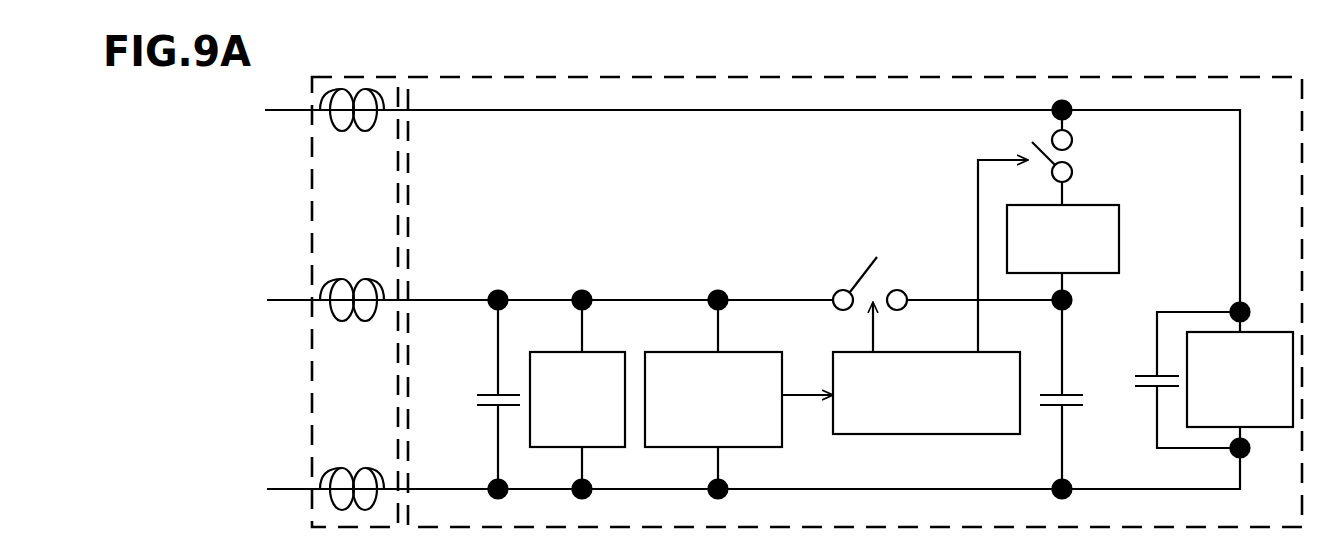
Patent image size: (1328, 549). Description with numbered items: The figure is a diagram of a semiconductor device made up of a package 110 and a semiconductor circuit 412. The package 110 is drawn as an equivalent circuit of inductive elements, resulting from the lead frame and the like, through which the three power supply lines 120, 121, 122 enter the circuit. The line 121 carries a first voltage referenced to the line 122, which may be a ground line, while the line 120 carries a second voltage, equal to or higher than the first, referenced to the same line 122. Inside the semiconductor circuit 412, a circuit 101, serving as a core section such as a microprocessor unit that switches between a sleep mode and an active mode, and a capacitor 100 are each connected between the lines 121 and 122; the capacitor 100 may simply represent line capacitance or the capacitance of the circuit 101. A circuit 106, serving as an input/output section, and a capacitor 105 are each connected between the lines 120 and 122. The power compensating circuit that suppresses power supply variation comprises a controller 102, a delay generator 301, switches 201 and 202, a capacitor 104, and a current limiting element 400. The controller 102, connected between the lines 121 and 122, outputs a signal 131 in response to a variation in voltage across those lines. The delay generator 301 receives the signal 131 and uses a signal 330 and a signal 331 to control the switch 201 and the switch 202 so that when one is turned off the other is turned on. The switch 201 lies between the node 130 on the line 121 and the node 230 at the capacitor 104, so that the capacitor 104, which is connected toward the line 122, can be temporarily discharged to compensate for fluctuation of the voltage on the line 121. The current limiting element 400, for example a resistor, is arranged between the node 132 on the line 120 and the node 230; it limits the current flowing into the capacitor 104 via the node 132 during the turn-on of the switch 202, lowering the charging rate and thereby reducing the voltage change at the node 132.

The capacitor 100 is at (492, 395).
The circuit 101 is at (615, 352).
The controller 102 is at (688, 352).
The capacitor 104 is at (1083, 405).
The capacitor 105 is at (1148, 373).
The circuit 106 is at (1272, 332).
The package 110 is at (312, 382).
The line 120 is at (295, 110).
The line 121 is at (282, 300).
The line 122 is at (278, 489).
The node 130 is at (578, 292).
The signal 131 is at (800, 395).
The node 132 is at (1072, 112).
The switch 201 is at (836, 292).
The switch 202 is at (1072, 172).
The node 230 is at (1072, 300).
The delay generator 301 is at (878, 434).
The signal 330 is at (875, 345).
The signal 331 is at (978, 237).
The current limiting element 400 is at (1119, 238).
The semiconductor circuit 412 is at (1035, 77).